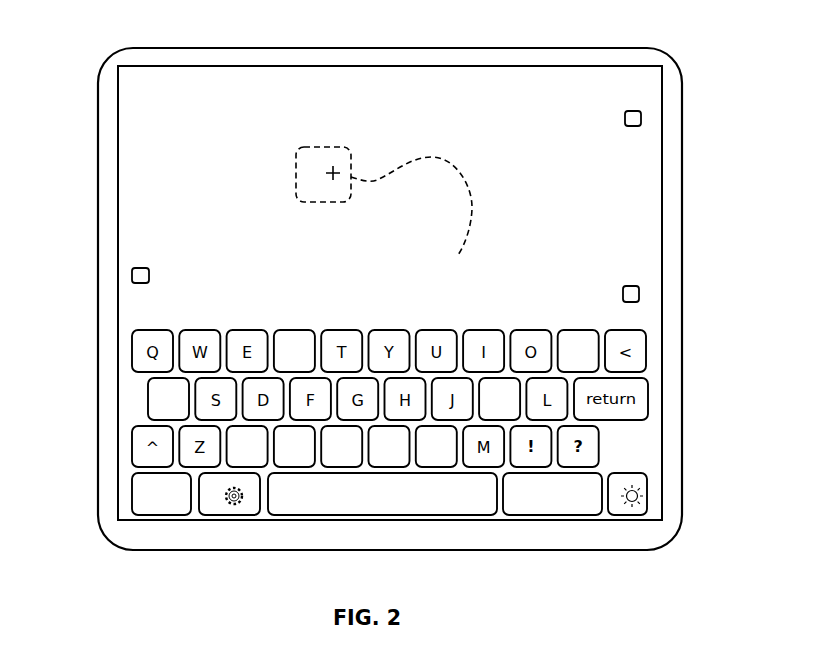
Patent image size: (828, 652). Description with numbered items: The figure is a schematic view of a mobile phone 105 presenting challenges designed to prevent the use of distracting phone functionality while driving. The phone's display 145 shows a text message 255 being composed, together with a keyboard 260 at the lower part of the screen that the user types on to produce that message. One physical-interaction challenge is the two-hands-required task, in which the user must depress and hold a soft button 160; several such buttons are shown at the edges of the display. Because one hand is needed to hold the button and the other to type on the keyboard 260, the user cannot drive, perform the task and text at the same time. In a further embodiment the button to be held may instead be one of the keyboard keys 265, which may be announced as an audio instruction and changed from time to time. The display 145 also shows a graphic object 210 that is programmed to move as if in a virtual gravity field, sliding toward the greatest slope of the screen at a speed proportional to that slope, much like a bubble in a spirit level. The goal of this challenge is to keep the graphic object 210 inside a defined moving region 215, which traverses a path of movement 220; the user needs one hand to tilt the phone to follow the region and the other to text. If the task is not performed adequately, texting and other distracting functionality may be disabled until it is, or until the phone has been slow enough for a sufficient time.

The mobile device 105 is at (538, 598).
The mobile phone display 145 is at (118, 190).
The soft button 160 is at (132, 275).
The text message 255 is at (187, 110).
The graphic object 210 is at (332, 171).
The moving region 215 is at (352, 158).
The path of movement 220 is at (440, 157).
The keyboard key 265 is at (238, 468).
The keyboard 260 is at (597, 523).